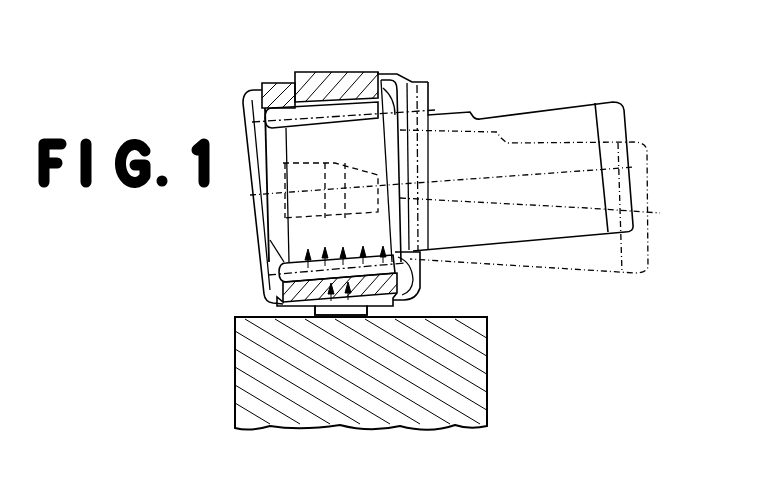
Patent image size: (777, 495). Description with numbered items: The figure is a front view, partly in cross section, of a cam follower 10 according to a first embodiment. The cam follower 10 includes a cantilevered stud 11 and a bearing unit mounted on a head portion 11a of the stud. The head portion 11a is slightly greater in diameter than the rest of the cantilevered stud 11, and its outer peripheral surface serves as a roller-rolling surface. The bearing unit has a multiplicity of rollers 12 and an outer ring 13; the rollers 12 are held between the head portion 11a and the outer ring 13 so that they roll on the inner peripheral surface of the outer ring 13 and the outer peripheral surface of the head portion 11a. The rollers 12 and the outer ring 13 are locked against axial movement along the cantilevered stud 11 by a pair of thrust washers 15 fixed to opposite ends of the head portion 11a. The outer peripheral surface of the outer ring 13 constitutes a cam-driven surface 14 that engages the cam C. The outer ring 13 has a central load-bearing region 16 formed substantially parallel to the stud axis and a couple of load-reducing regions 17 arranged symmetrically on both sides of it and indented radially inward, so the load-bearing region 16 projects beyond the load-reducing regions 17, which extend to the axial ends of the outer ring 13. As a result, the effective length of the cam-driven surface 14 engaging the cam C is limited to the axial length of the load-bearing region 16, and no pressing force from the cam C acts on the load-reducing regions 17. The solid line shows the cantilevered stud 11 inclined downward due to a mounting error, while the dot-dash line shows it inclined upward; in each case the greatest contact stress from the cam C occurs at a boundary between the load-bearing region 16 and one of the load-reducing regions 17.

The cam follower 10 is at (400, 71).
The cantilevered stud 11 is at (568, 117).
The head portion 11a is at (270, 242).
The rollers 12 is at (378, 71).
The outer ring 13 is at (270, 83).
The cam-driven surface 14 is at (307, 67).
The thrust washers 15 is at (246, 100).
The central load-bearing region 16 is at (357, 317).
The load-reducing regions 17 is at (298, 304).
The cam C is at (477, 387).